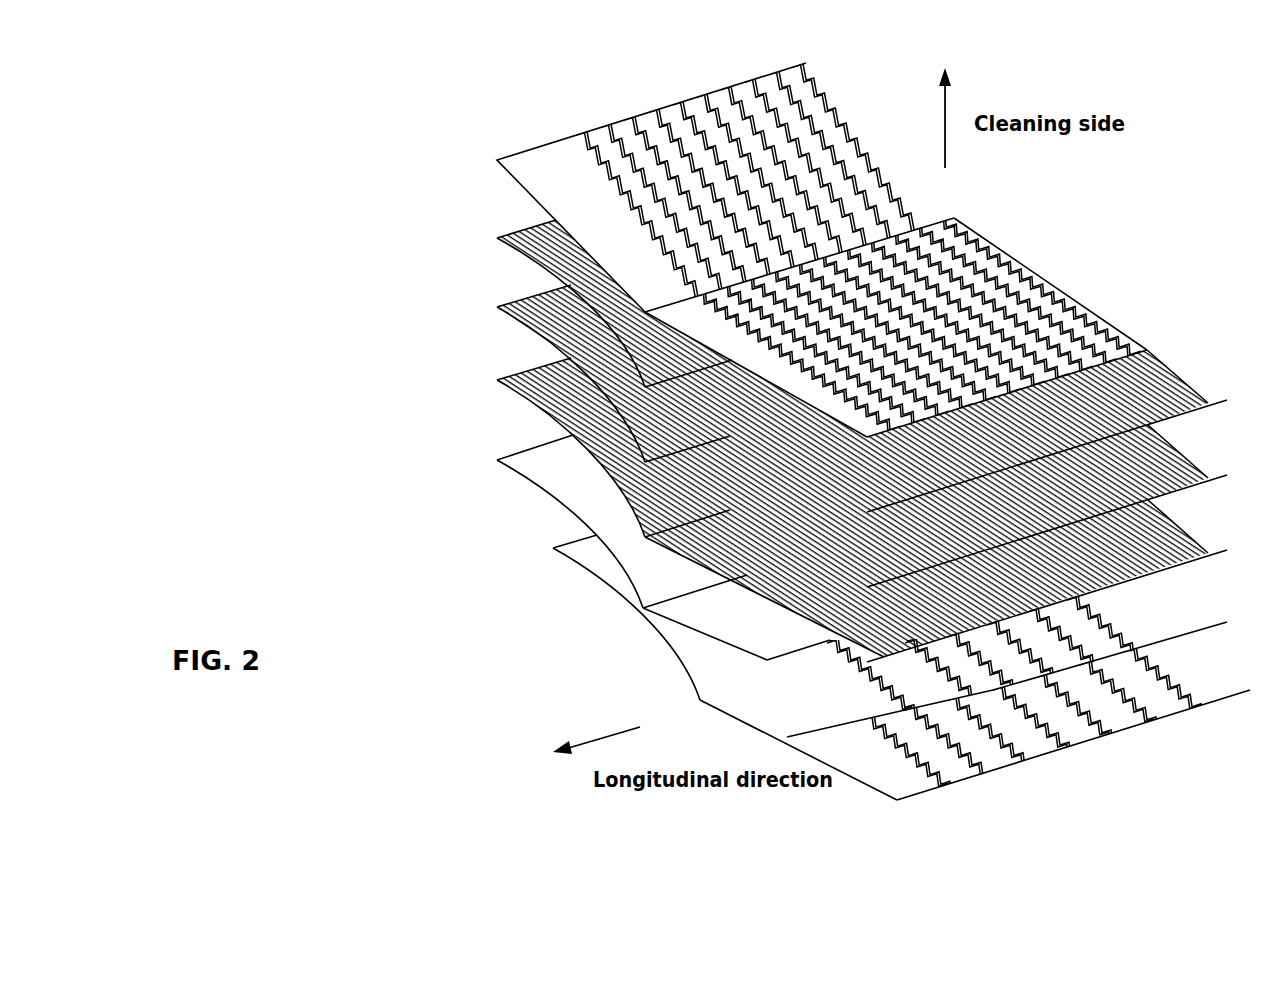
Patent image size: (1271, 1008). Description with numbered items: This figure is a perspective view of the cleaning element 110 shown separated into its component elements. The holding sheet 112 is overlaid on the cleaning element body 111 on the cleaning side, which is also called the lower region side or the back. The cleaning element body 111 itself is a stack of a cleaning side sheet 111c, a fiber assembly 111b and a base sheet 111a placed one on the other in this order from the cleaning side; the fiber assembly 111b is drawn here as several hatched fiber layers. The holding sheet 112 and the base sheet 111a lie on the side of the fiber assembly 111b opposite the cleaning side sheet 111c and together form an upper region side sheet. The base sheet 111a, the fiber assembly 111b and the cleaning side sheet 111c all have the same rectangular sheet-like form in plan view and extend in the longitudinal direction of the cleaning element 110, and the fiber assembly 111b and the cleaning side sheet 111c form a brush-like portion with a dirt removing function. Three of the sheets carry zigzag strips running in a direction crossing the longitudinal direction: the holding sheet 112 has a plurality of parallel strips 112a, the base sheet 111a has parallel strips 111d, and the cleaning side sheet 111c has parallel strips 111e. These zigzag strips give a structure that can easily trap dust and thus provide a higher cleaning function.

The cleaning element 110 is at (1118, 254).
The cleaning element body 111 is at (360, 158).
The base sheet 111a is at (524, 475).
The fiber assembly 111b is at (456, 228).
The cleaning side sheet 111c is at (513, 176).
The strips 111d is at (940, 698).
The strips 111e is at (637, 124).
The holding sheet 112 is at (578, 594).
The strips 112a is at (993, 760).